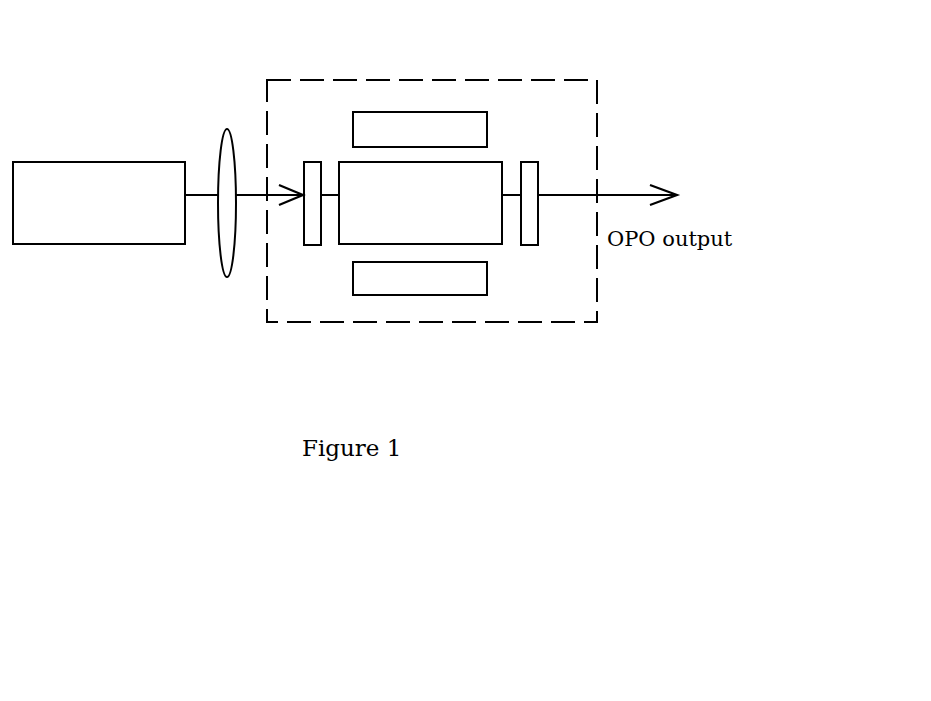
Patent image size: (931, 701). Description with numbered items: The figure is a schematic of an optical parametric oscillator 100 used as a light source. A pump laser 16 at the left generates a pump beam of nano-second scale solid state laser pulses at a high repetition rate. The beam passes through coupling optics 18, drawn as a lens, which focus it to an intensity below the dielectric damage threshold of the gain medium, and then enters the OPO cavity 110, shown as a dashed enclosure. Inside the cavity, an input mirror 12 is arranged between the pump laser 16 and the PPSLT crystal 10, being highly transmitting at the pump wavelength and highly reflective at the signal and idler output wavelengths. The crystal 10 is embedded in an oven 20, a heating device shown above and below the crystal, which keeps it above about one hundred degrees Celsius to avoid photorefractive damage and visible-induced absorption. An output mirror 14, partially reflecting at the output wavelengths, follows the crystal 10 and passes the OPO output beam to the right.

The optical parametric oscillator 100 is at (509, 52).
The OPO cavity 110 is at (583, 78).
The pump laser 16 is at (78, 167).
The coupling optics 18 is at (225, 157).
The input mirror 12 is at (306, 228).
The PPSLT crystal 10 is at (488, 237).
The output mirror 14 is at (532, 233).
The oven 20 is at (485, 125).